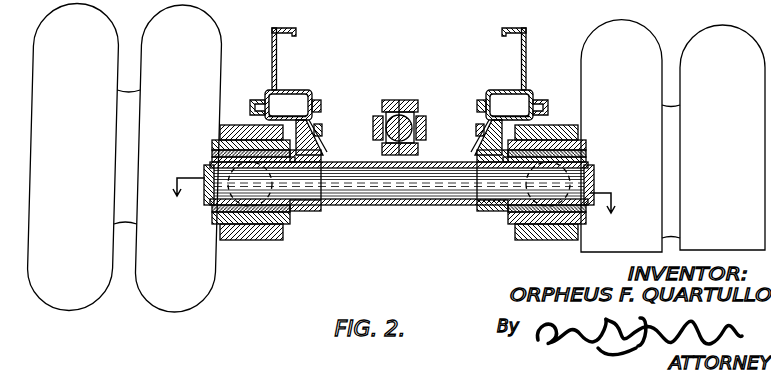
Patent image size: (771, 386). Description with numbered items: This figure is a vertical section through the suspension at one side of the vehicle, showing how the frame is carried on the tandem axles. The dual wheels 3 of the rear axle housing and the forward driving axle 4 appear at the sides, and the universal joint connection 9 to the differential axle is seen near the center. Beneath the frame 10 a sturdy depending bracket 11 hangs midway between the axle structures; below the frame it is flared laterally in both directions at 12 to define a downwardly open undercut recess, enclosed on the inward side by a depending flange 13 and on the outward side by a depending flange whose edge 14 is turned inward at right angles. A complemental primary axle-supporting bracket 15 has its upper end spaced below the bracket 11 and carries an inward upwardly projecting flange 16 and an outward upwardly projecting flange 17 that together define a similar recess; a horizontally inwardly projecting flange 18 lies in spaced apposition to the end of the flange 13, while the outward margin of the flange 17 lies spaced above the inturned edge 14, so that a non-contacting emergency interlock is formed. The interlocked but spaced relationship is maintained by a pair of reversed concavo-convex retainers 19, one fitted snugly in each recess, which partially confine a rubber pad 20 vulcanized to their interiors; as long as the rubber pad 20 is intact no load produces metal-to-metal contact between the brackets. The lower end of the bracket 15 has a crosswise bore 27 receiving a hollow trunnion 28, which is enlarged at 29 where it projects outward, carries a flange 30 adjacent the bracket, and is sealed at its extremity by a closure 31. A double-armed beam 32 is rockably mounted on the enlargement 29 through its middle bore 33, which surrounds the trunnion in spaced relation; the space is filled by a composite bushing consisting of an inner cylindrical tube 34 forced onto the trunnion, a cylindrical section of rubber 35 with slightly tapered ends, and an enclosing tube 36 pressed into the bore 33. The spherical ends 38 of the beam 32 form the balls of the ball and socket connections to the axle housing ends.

The dual wheels 3 is at (700, 40).
The driving axle 4 is at (154, 22).
The universal joint connection 9 is at (400, 112).
The frame 10 is at (500, 36).
The depending bracket 11 is at (530, 62).
The laterally flared portion 12 is at (500, 90).
The depending flange 13 is at (486, 114).
The inwardly flanged edge 14 is at (548, 110).
The primary axle-supporting bracket 15 is at (478, 122).
The inward upwardly projecting flange 16 is at (472, 102).
The outward upwardly projecting flange 17 is at (546, 118).
The horizontally inwardly projecting flange 18 is at (316, 110).
The concavo-convex retainers 19 is at (480, 130).
The rubber pad 20 is at (534, 94).
The crosswise bore 27 is at (480, 214).
The hollow trunnion 28 is at (400, 208).
The trunnion enlargement 29 is at (590, 168).
The trunnion flange 30 is at (505, 238).
The closure 31 is at (590, 206).
The double-armed beam 32 is at (522, 242).
The middle bore 33 is at (568, 242).
The inner cylindrical tube 34 is at (590, 156).
The cylindrical section of rubber 35 is at (586, 150).
The enclosing tube 36 is at (575, 142).
The spherical beam end 38 is at (548, 242).